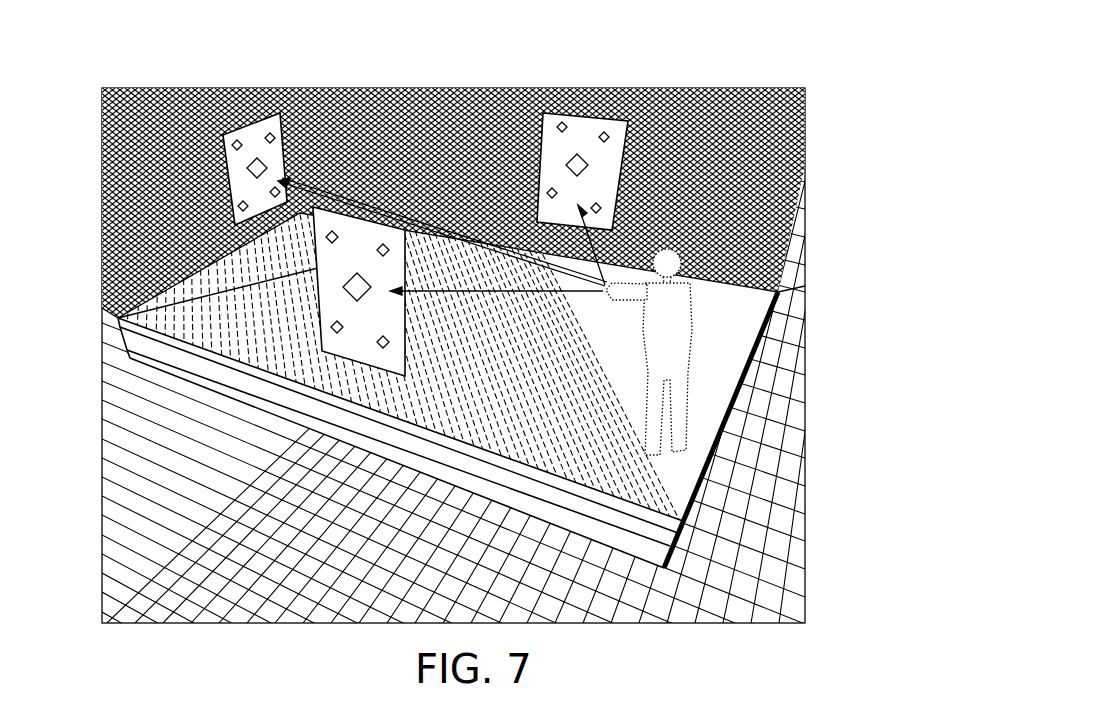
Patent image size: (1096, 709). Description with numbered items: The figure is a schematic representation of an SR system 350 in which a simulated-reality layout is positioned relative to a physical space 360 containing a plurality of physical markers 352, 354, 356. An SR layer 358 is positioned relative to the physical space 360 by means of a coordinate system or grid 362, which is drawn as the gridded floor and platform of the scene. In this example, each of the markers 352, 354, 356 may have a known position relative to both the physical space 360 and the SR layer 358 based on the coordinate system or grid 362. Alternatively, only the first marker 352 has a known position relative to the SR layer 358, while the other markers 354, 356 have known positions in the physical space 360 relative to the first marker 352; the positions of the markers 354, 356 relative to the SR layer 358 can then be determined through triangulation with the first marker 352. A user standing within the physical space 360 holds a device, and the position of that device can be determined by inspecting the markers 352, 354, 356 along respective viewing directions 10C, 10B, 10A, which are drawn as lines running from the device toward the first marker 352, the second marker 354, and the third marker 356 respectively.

The SR system 350 is at (826, 104).
The first physical marker 352 is at (335, 293).
The second physical marker 354 is at (243, 128).
The third physical marker 356 is at (545, 150).
The SR layer 358 is at (708, 376).
The physical space 360 is at (638, 548).
The coordinate system or grid 362 is at (190, 427).
The viewing direction 10A is at (626, 282).
The viewing direction 10B is at (445, 232).
The viewing direction 10C is at (480, 293).